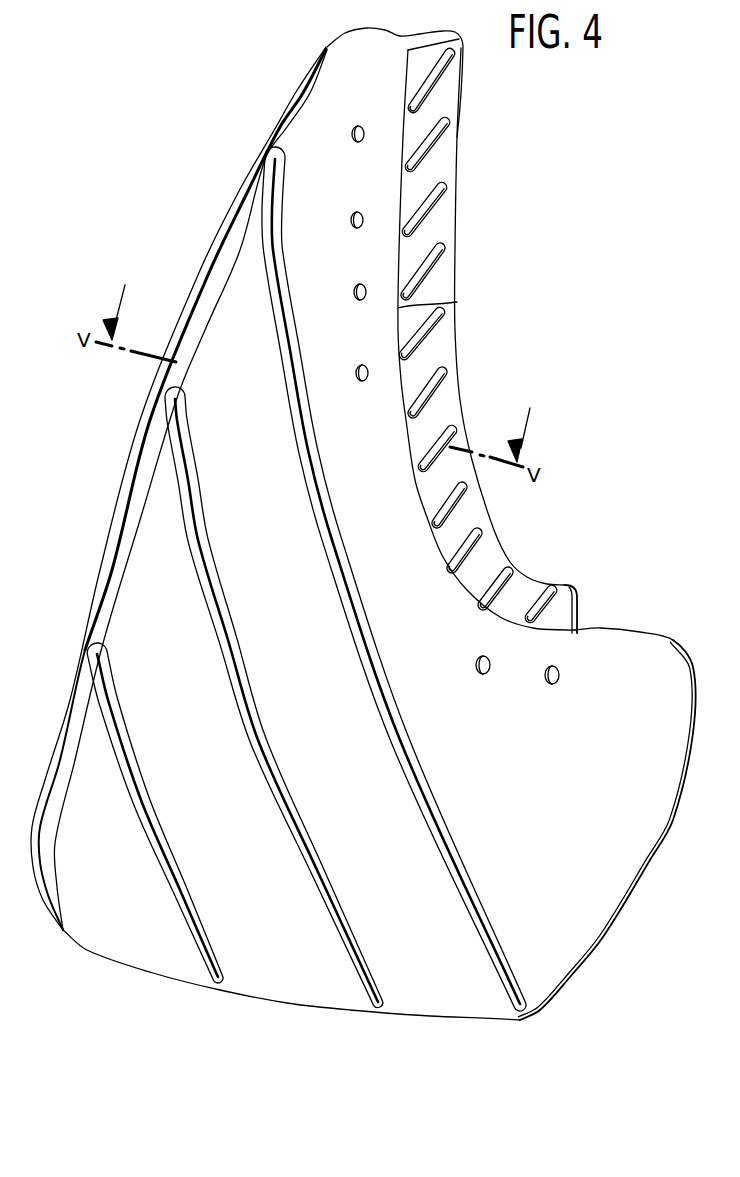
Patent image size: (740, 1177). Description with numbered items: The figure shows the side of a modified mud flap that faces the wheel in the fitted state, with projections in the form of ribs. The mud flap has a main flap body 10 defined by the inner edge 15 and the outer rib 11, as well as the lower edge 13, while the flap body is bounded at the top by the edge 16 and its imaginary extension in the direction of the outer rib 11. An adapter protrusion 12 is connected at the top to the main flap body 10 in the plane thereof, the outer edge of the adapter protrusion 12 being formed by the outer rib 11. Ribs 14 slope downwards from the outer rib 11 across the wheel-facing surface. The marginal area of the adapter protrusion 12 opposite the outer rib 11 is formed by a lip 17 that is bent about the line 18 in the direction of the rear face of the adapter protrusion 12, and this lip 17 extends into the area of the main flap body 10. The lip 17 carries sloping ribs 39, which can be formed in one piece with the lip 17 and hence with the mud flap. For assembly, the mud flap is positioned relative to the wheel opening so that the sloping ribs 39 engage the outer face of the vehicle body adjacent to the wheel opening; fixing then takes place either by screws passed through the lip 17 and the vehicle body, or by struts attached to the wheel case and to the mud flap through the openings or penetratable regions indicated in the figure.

The main flap body 10 is at (376, 541).
The outer rib 11 is at (100, 612).
The adapter protrusion 12 is at (315, 118).
The lower edge 13 is at (325, 1012).
The ribs 14 is at (282, 225).
The inner edge 15 is at (670, 810).
The edge 16 is at (617, 631).
The lip 17 is at (481, 336).
The line 18 is at (452, 304).
The sloping ribs 39 is at (440, 128).